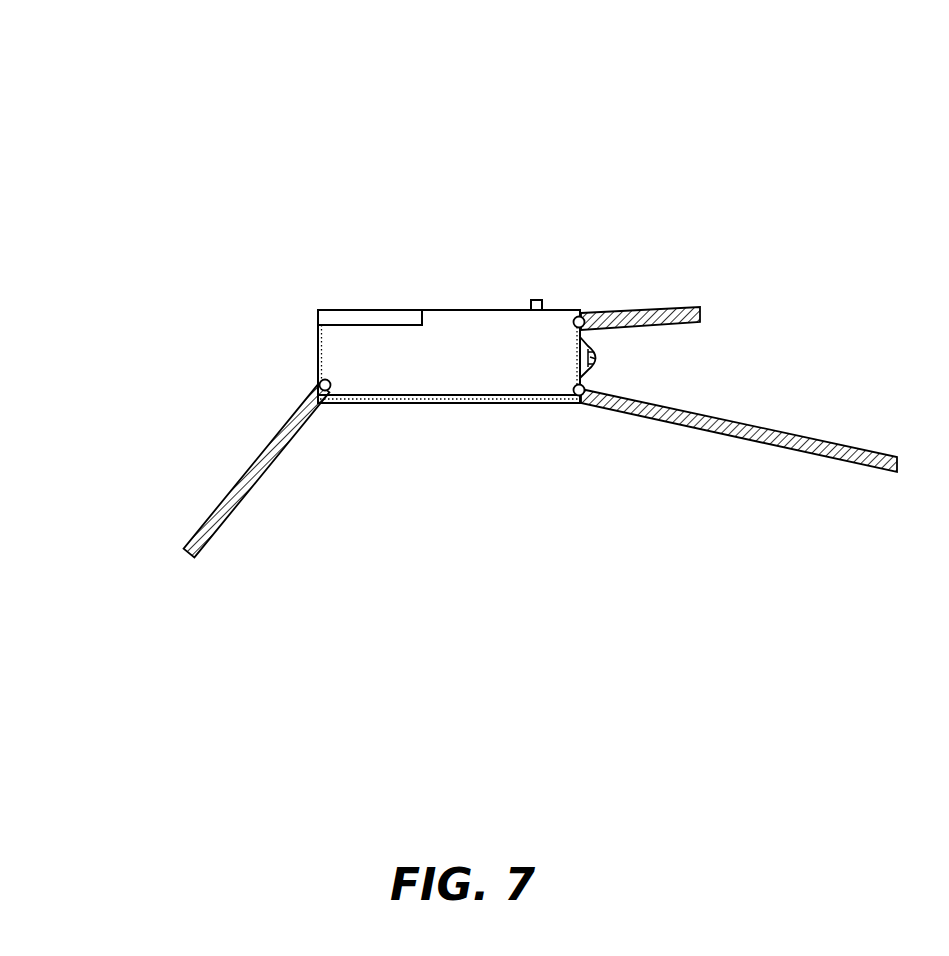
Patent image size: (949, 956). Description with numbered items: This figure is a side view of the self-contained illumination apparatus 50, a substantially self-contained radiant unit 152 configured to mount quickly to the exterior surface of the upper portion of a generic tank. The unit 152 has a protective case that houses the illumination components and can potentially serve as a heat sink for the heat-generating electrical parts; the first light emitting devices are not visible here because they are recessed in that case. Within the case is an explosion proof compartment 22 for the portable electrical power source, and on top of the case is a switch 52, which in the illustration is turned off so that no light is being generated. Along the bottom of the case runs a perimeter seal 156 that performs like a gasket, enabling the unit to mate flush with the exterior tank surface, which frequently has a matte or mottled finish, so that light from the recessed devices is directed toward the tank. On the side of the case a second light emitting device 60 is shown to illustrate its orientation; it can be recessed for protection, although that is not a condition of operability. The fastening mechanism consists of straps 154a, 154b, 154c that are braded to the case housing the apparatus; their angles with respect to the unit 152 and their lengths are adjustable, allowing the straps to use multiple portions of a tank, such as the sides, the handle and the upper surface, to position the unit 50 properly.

The assimilated illumination apparatus 50 is at (516, 168).
The explosion proof compartment 22 is at (335, 309).
The switch 52 is at (545, 305).
The second light emitting device 60 is at (598, 359).
The self-contained radiant unit 152 is at (335, 358).
The strap 154a is at (695, 308).
The strap 154b is at (725, 427).
The strap 154c is at (258, 452).
The perimeter seal 156 is at (423, 403).